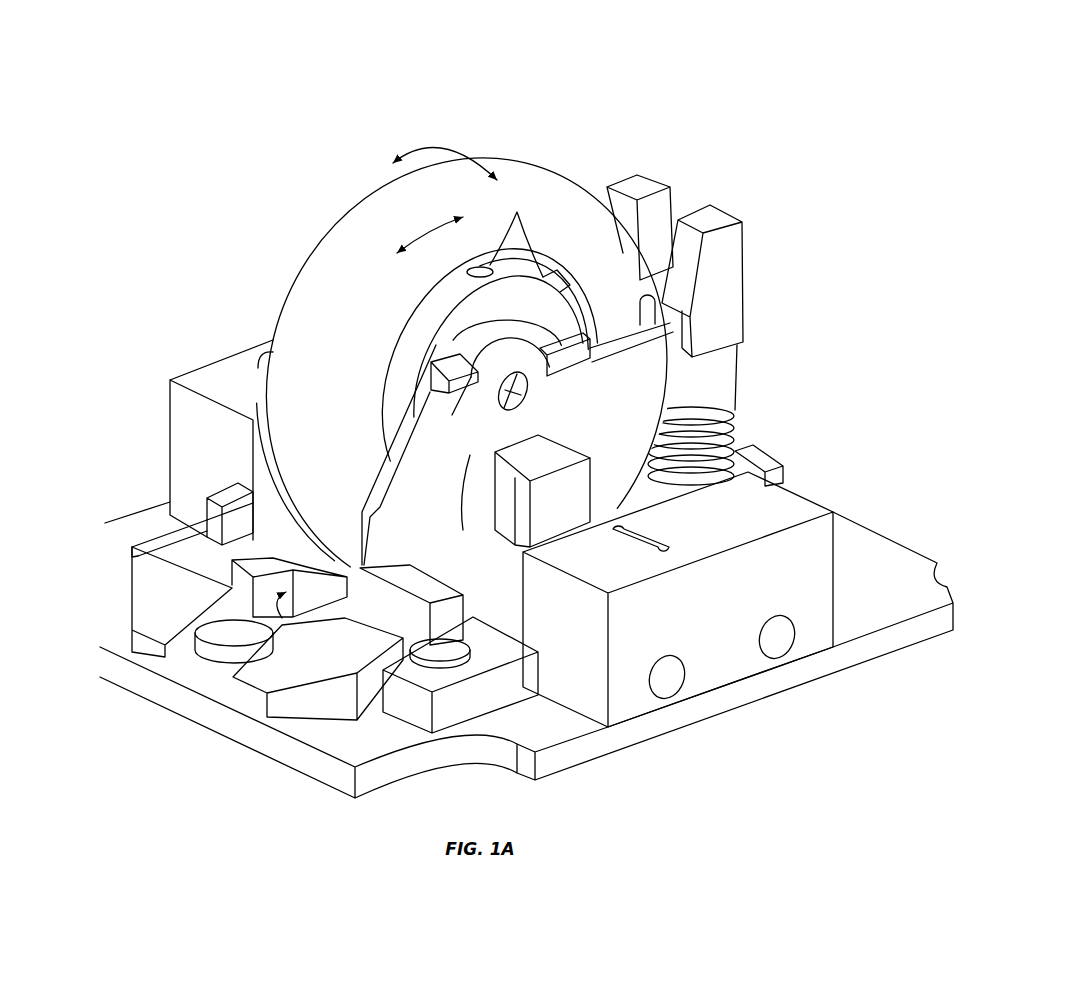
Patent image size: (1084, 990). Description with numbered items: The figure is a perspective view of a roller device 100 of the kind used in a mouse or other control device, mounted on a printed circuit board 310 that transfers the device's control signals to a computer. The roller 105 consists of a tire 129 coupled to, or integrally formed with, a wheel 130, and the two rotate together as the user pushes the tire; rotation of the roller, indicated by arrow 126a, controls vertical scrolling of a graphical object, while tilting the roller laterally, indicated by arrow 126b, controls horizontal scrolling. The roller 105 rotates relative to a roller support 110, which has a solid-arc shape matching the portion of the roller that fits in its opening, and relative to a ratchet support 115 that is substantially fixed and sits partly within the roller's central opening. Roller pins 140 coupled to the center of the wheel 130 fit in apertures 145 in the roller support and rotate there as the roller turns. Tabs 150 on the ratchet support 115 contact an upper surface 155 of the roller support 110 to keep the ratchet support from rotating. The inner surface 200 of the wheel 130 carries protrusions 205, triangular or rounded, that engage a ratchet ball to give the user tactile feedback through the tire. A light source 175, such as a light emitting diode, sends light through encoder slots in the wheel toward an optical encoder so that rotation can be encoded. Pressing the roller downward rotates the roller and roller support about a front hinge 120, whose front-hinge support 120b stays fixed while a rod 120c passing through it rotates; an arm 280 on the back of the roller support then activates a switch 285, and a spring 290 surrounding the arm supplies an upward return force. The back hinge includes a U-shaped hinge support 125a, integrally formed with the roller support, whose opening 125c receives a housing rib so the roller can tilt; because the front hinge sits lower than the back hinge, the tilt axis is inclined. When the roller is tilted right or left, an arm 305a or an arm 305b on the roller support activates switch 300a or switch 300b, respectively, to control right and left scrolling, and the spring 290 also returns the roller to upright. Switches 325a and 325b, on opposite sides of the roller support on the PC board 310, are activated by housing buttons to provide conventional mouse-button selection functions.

The roller device 100 is at (192, 108).
The roller 105 is at (273, 265).
The roller support 110 is at (414, 514).
The ratchet support 115 is at (499, 306).
The front hinge 120 is at (125, 588).
The front-hinge support 120b is at (279, 674).
The rod 120c is at (300, 612).
The hinge support 125a is at (640, 183).
The opening 125c is at (678, 207).
The arrow 126a is at (428, 232).
The arrow 126b is at (437, 152).
The tire 129 is at (410, 201).
The wheel 130 is at (590, 314).
The roller pins 140 is at (507, 404).
The apertures 145 is at (524, 398).
The tabs 150 is at (558, 340).
The upper surface 155 is at (460, 390).
The light source 175 is at (545, 511).
The inner surface 200 is at (575, 270).
The protrusions 205 is at (519, 267).
The arm 280 is at (734, 448).
The switch 285 is at (757, 462).
The spring 290 is at (732, 418).
The switch 300a is at (453, 707).
The switch 300b is at (155, 542).
The arm 305a is at (437, 592).
The arm 305b is at (232, 498).
The printed circuit board 310 is at (868, 604).
The switch 325a is at (681, 634).
The switch 325b is at (209, 394).